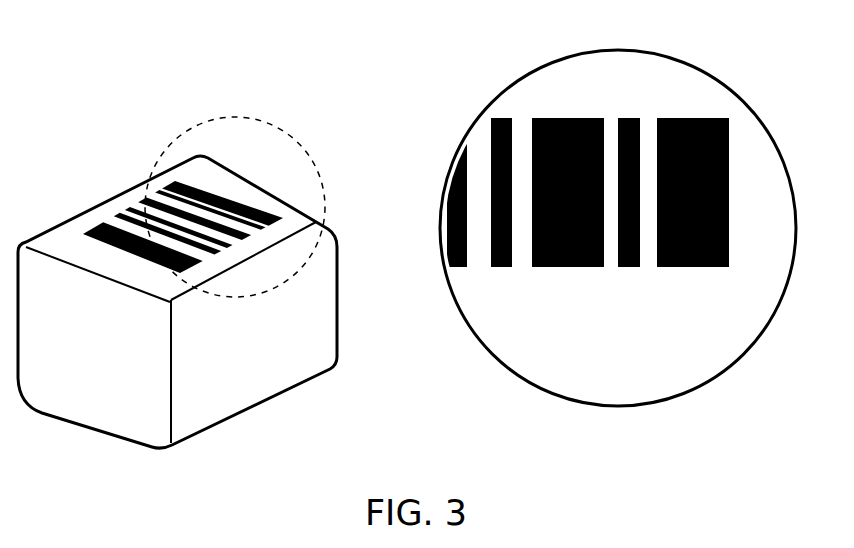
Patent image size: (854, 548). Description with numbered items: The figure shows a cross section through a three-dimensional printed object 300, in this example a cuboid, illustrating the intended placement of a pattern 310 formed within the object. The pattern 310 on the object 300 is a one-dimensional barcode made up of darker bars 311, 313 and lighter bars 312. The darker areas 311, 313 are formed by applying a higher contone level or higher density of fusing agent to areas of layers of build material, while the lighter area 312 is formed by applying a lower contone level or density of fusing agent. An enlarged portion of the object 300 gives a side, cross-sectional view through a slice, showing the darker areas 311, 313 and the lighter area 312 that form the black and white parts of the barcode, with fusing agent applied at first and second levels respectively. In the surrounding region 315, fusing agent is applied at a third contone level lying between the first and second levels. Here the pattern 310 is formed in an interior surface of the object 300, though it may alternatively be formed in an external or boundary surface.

The three-dimensional printed object 300 is at (774, 95).
The pattern 310 is at (171, 142).
The darker bar 311 is at (229, 194).
The lighter bar 312 is at (203, 213).
The darker bar 313 is at (192, 203).
The region 315 is at (598, 322).